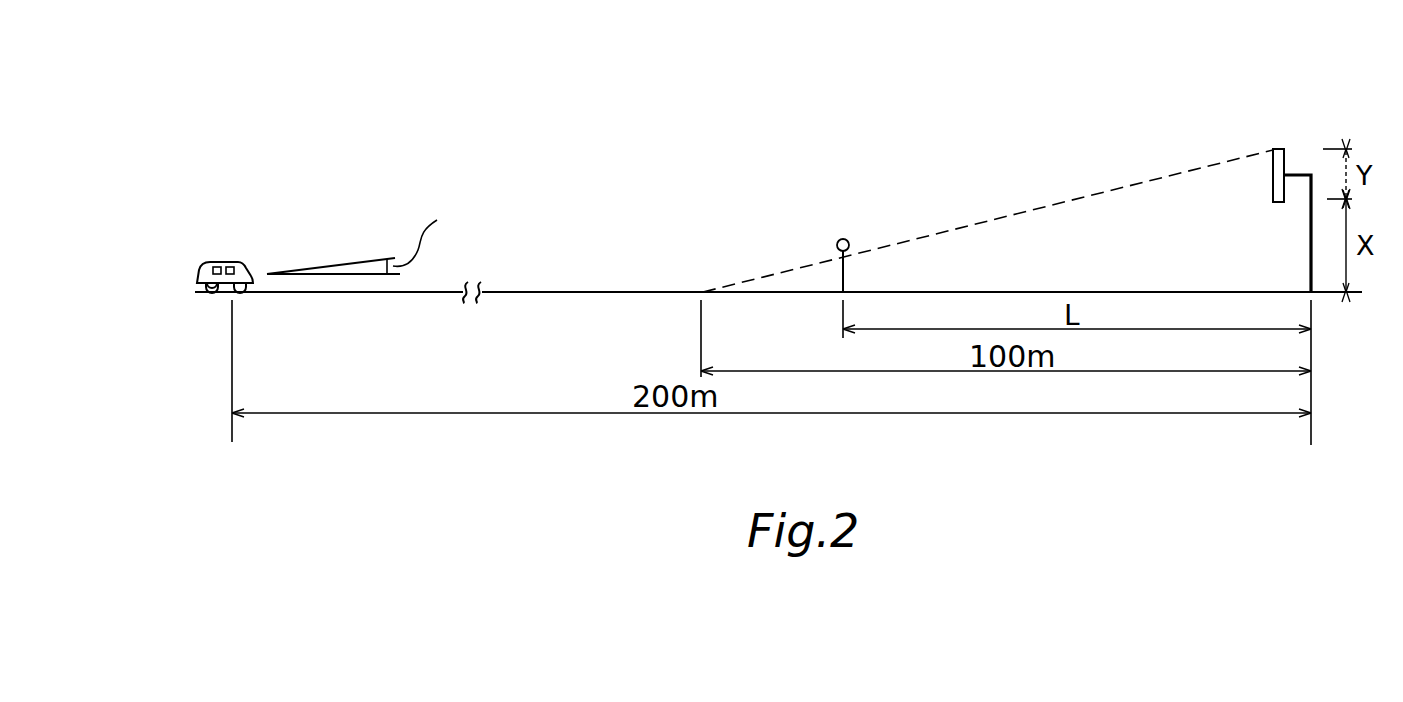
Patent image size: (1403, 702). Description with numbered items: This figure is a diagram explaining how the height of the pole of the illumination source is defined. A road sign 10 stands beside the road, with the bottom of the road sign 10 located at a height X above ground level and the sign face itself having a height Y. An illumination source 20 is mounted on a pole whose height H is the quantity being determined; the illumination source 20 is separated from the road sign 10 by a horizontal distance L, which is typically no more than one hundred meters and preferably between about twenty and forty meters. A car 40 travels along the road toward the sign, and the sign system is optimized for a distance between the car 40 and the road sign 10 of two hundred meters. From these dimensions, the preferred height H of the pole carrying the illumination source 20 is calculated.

The road sign 10 is at (1280, 149).
The illumination source 20 is at (848, 241).
The car 40 is at (235, 262).